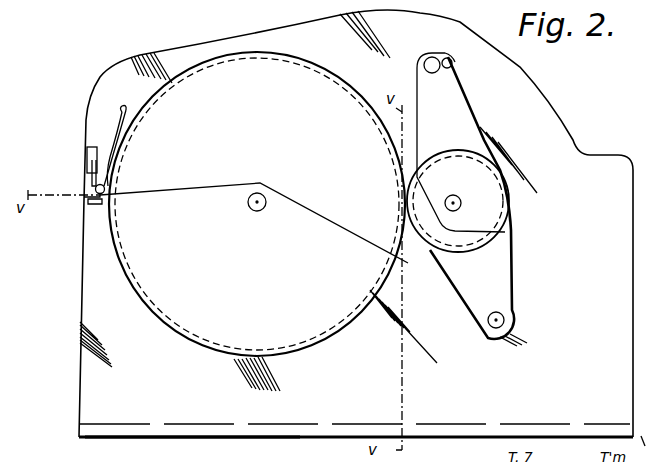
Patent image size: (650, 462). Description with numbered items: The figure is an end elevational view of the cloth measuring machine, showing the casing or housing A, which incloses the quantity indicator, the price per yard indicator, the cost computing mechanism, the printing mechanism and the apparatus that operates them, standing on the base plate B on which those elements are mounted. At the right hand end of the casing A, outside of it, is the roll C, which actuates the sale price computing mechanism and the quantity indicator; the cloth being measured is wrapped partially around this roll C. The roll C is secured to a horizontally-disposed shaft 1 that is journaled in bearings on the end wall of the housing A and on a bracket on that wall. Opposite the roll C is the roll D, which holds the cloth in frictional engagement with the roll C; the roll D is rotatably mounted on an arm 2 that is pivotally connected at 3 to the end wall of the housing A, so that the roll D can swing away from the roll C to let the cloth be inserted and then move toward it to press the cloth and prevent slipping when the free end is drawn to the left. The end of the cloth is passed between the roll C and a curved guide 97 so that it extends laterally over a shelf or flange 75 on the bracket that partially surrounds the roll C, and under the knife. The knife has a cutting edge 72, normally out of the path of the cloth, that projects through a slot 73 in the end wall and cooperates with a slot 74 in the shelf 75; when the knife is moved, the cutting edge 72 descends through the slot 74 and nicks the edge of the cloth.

The casing A is at (557, 133).
The base plate B is at (116, 436).
The roll C is at (330, 100).
The roll D is at (478, 237).
The shaft 1 is at (257, 211).
The arm 2 is at (460, 118).
The pivot 3 is at (504, 320).
The curved guide 97 is at (123, 118).
The cutting edge 72 is at (88, 148).
The slot 73 is at (92, 167).
The slot 74 is at (92, 200).
The shelf 75 is at (97, 205).